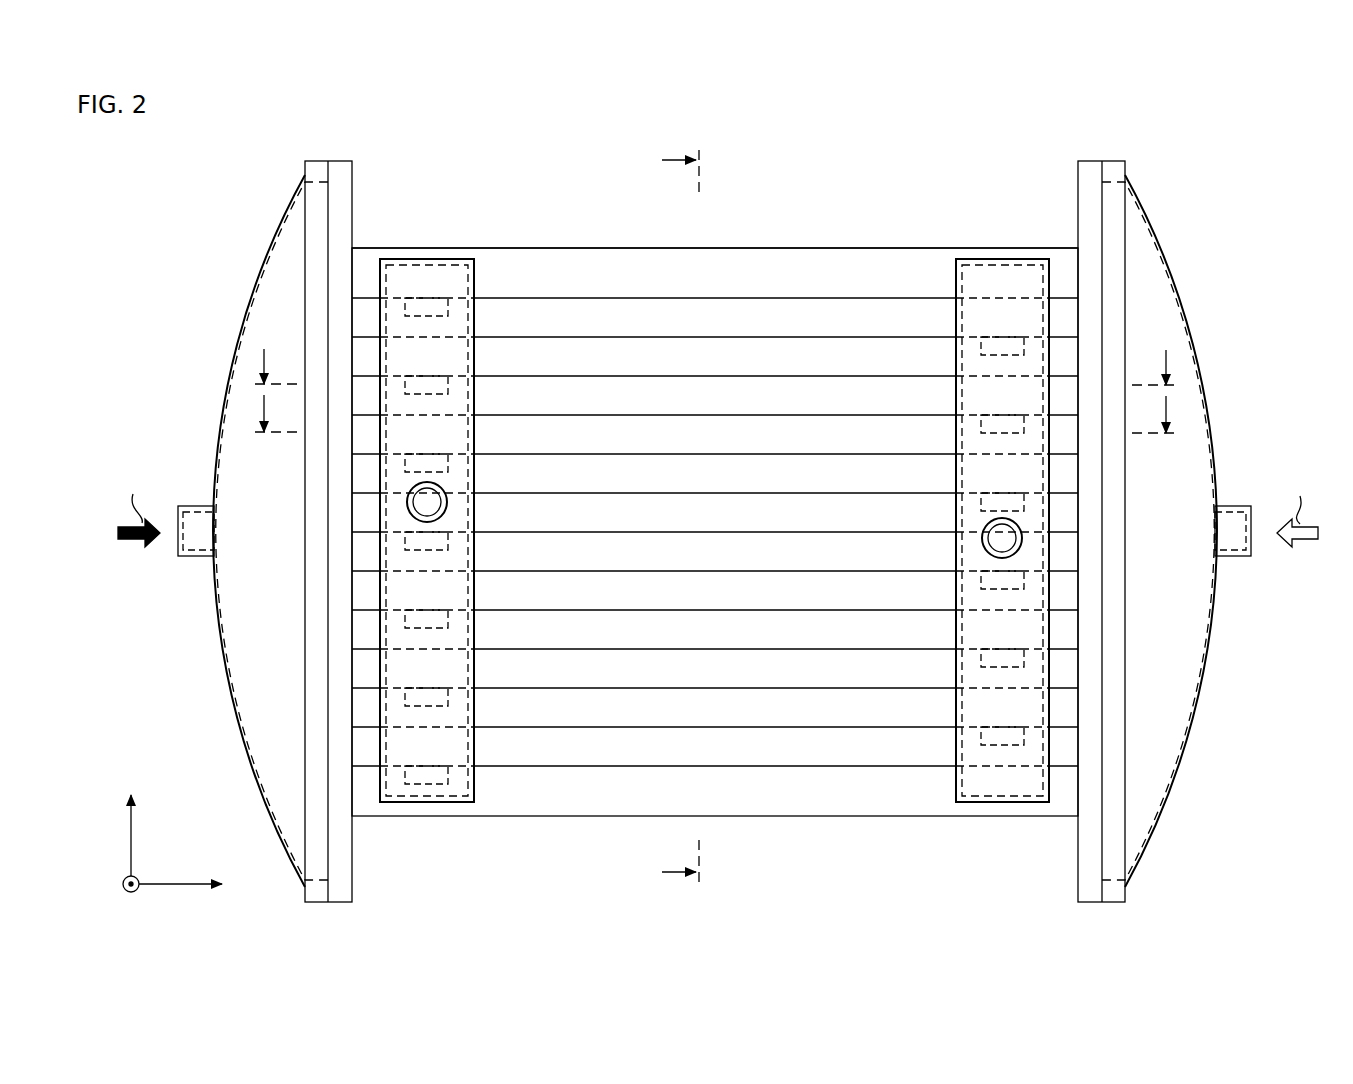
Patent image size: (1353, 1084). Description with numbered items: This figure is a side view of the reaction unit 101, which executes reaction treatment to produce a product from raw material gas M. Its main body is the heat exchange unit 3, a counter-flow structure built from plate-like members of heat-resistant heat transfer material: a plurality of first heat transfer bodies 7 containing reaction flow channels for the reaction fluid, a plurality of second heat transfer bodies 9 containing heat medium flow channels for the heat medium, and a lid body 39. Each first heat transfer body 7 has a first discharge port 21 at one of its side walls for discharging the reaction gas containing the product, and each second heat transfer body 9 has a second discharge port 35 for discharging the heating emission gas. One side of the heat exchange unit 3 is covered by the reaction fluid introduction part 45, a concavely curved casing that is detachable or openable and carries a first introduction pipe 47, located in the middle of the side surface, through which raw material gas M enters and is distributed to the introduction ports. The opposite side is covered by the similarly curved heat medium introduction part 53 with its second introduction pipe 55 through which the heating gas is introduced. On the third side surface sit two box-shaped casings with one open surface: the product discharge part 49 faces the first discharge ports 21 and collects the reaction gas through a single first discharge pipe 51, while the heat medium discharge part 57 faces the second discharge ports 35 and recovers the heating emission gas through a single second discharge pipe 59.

The reaction unit 101 is at (867, 190).
The heat exchange unit 3 is at (597, 247).
The lid body 39 is at (766, 258).
The first heat transfer body 7 is at (757, 347).
The second heat transfer body 9 is at (757, 308).
The first discharge port 21 is at (1000, 352).
The second discharge port 35 is at (430, 314).
The reaction fluid introduction part 45 is at (252, 268).
The first introduction pipe 47 is at (196, 506).
The product discharge part 49 is at (1005, 258).
The first discharge pipe 51 is at (982, 540).
The heat medium introduction part 53 is at (1178, 265).
The second introduction pipe 55 is at (1233, 506).
The heat medium discharge part 57 is at (427, 258).
The second discharge pipe 59 is at (447, 508).